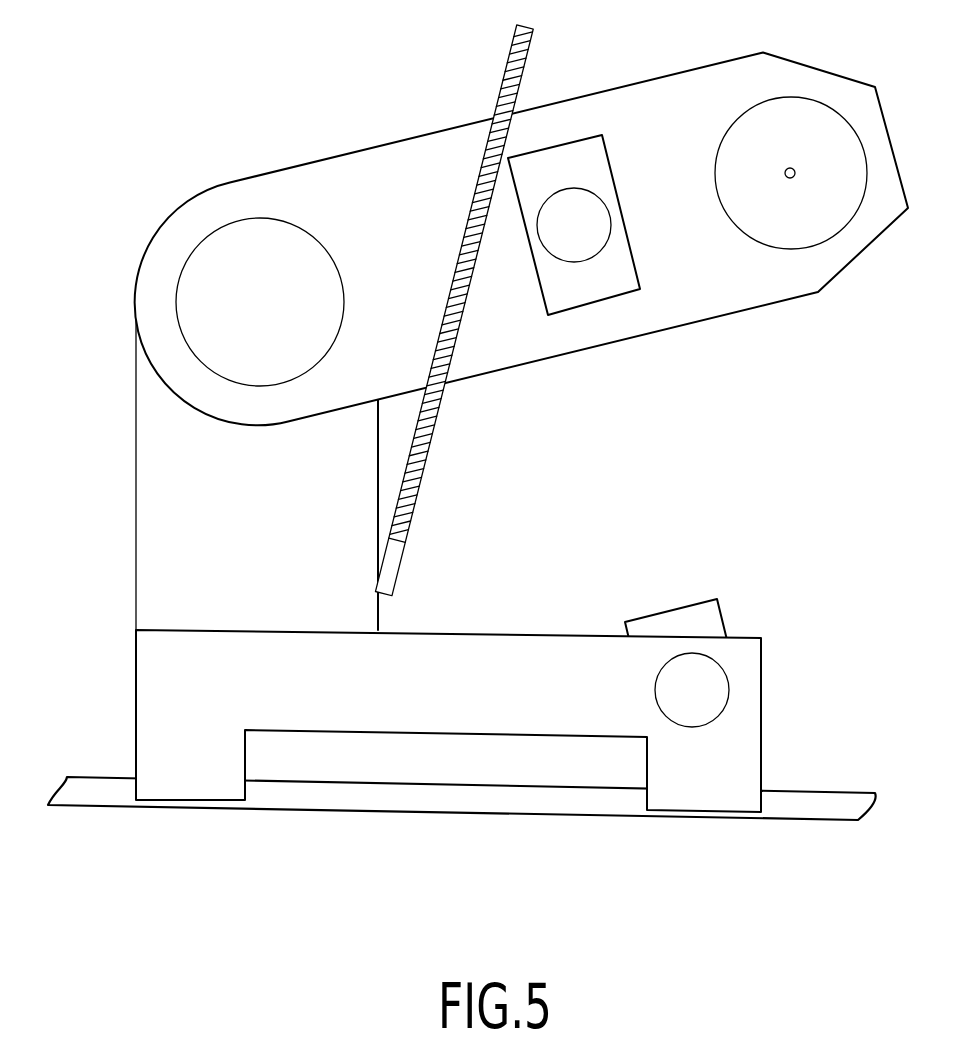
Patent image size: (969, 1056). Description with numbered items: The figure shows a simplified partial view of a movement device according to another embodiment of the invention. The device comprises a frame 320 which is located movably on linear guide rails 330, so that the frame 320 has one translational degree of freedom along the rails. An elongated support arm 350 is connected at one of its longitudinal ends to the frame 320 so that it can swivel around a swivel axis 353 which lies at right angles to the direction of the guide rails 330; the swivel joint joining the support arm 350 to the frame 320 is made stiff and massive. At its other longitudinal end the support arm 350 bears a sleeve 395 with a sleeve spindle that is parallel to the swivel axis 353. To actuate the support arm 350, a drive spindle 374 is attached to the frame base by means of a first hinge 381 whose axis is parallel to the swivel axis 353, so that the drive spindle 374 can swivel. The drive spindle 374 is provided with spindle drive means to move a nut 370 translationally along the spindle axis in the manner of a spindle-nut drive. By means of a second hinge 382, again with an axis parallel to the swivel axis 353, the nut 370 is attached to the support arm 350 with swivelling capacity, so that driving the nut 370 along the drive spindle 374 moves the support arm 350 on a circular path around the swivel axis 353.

The frame 320 is at (158, 528).
The linear guide rails 330 is at (443, 802).
The support arm 350 is at (427, 167).
The swivel axis 353 is at (252, 300).
The nut 370 is at (583, 153).
The drive spindle 374 is at (632, 435).
The first hinge 381 is at (698, 683).
The second hinge 382 is at (567, 222).
The sleeve 395 is at (786, 165).